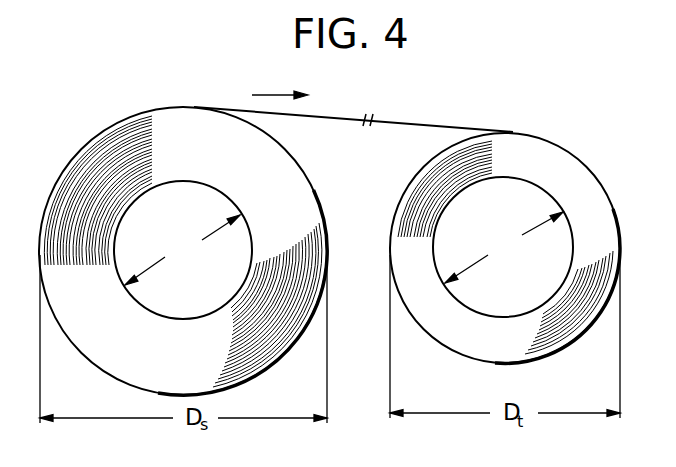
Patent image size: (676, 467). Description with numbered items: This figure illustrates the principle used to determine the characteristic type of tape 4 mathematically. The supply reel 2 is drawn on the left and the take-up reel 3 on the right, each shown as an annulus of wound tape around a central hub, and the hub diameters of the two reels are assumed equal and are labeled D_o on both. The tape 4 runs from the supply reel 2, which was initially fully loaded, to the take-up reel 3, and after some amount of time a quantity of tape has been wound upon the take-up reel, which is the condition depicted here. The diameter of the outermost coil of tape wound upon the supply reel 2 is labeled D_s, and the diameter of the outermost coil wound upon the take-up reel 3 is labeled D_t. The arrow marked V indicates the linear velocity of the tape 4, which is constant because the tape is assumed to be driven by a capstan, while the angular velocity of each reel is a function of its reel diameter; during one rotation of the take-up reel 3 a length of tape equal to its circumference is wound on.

The supply reel 2 is at (184, 193).
The take-up reel 3 is at (501, 195).
The tape 4 is at (413, 123).